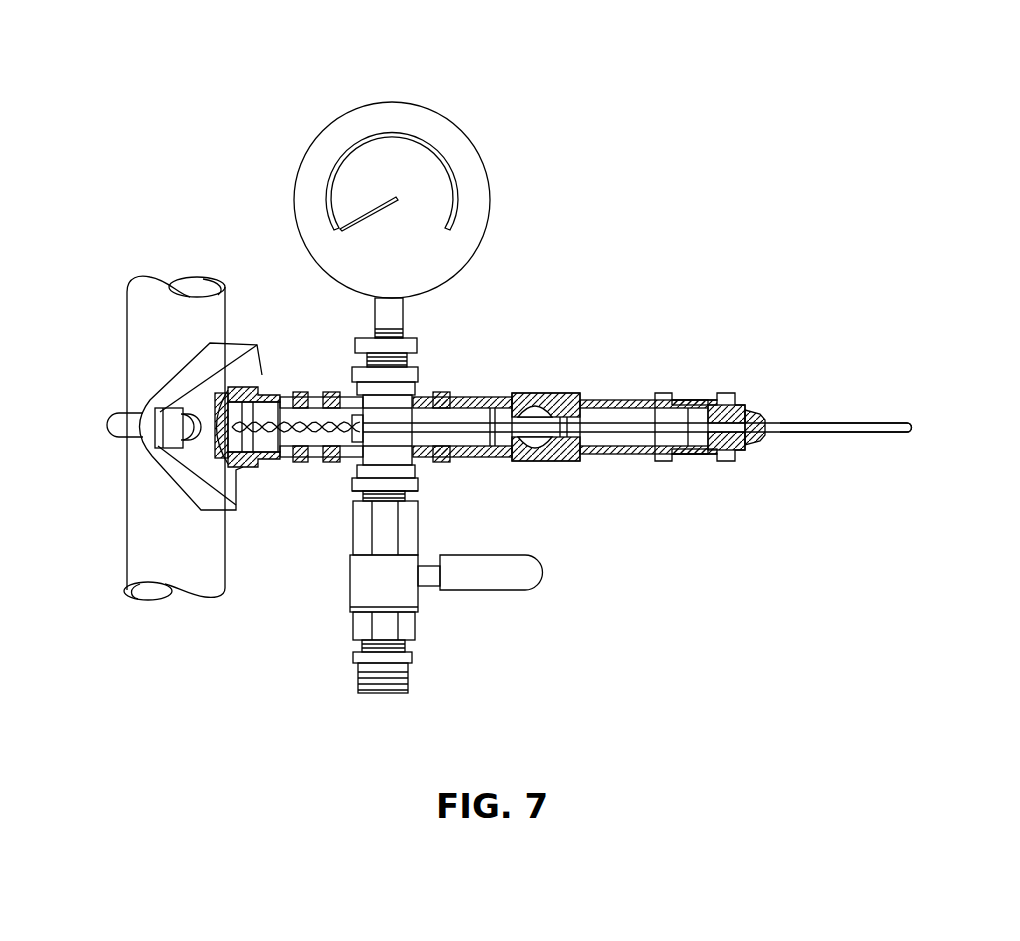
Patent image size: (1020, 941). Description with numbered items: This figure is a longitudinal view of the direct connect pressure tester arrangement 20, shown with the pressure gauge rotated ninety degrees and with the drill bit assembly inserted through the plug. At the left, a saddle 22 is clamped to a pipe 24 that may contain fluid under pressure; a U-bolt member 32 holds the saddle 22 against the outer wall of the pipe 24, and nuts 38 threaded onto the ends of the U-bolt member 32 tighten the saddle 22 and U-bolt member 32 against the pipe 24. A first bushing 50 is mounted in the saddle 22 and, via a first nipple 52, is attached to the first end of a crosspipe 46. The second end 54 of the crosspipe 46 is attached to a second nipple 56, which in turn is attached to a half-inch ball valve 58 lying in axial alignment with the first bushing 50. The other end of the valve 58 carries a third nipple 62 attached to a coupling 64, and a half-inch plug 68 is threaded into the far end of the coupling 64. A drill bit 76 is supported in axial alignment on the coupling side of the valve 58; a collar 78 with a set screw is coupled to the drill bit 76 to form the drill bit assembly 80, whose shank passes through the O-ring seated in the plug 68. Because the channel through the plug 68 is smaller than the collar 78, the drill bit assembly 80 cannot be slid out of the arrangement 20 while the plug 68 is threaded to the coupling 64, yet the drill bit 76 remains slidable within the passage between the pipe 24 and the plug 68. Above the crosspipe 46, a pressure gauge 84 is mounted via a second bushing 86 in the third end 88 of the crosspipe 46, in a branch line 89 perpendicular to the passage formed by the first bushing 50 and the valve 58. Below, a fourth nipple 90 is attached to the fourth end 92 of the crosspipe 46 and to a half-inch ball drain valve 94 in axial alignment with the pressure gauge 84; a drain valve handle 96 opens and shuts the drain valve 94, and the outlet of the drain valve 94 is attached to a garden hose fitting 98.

The direct connect pressure tester arrangement 20 is at (588, 160).
The saddle 22 is at (258, 507).
The pipe 24 is at (125, 330).
The U-bolt member 32 is at (108, 420).
The nuts 38 is at (165, 434).
The crosspipe 46 is at (420, 458).
The first bushing 50 is at (300, 394).
The first nipple 52 is at (314, 460).
The second end 54 is at (438, 393).
The second nipple 56 is at (453, 398).
The ball valve 58 is at (549, 393).
The third nipple 62 is at (617, 402).
The coupling 64 is at (690, 400).
The plug 68 is at (745, 413).
The drill bit 76 is at (812, 434).
The collar 78 is at (358, 420).
The drill bit assembly 80 is at (832, 421).
The pressure gauge 84 is at (368, 104).
The second bushing 86 is at (407, 328).
The third end 88 is at (354, 378).
The branch line 89 is at (365, 360).
The fourth nipple 90 is at (405, 495).
The fourth end 92 is at (347, 474).
The drain valve 94 is at (420, 598).
The drain valve handle 96 is at (545, 573).
The garden hose fitting 98 is at (412, 656).